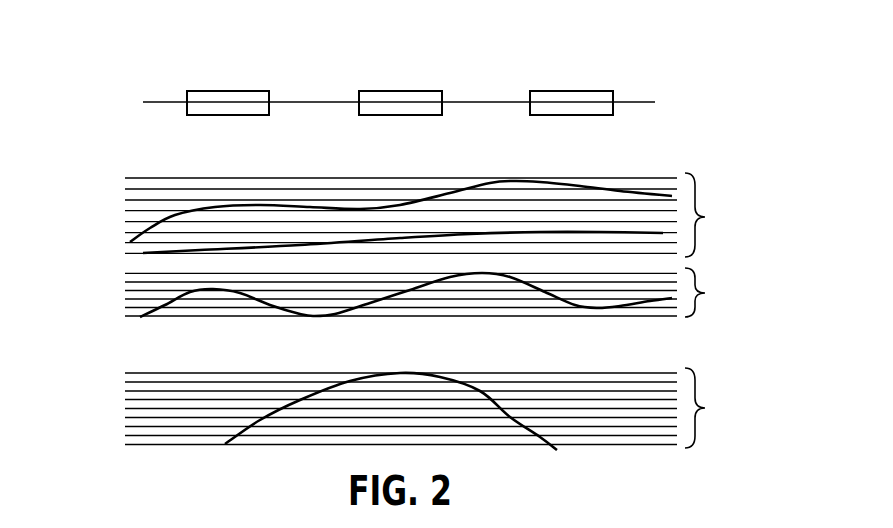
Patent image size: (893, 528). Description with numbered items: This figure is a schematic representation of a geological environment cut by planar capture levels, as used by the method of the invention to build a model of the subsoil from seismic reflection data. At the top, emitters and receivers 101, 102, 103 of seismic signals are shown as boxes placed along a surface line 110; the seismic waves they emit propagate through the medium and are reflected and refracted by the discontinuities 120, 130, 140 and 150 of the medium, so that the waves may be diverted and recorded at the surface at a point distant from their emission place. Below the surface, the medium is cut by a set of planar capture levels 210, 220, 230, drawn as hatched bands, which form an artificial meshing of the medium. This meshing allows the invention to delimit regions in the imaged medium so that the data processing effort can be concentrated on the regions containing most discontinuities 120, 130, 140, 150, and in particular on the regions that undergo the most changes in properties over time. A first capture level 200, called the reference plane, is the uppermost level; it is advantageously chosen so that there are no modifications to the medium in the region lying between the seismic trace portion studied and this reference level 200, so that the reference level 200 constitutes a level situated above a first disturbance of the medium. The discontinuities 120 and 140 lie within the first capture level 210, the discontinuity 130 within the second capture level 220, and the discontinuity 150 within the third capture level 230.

The emitter/receiver of seismic signals 101 is at (208, 91).
The emitter/receiver of seismic signals 102 is at (420, 91).
The emitter/receiver of seismic signals 103 is at (598, 91).
The sensor line / conveyor 110 is at (492, 100).
The discontinuity 120 is at (618, 187).
The discontinuity 130 is at (142, 307).
The discontinuity 140 is at (145, 253).
The discontinuity 150 is at (472, 387).
The reference level 200 is at (435, 285).
The planar capture level 210 is at (437, 215).
The planar capture level 220 is at (437, 292).
The planar capture level 230 is at (438, 408).